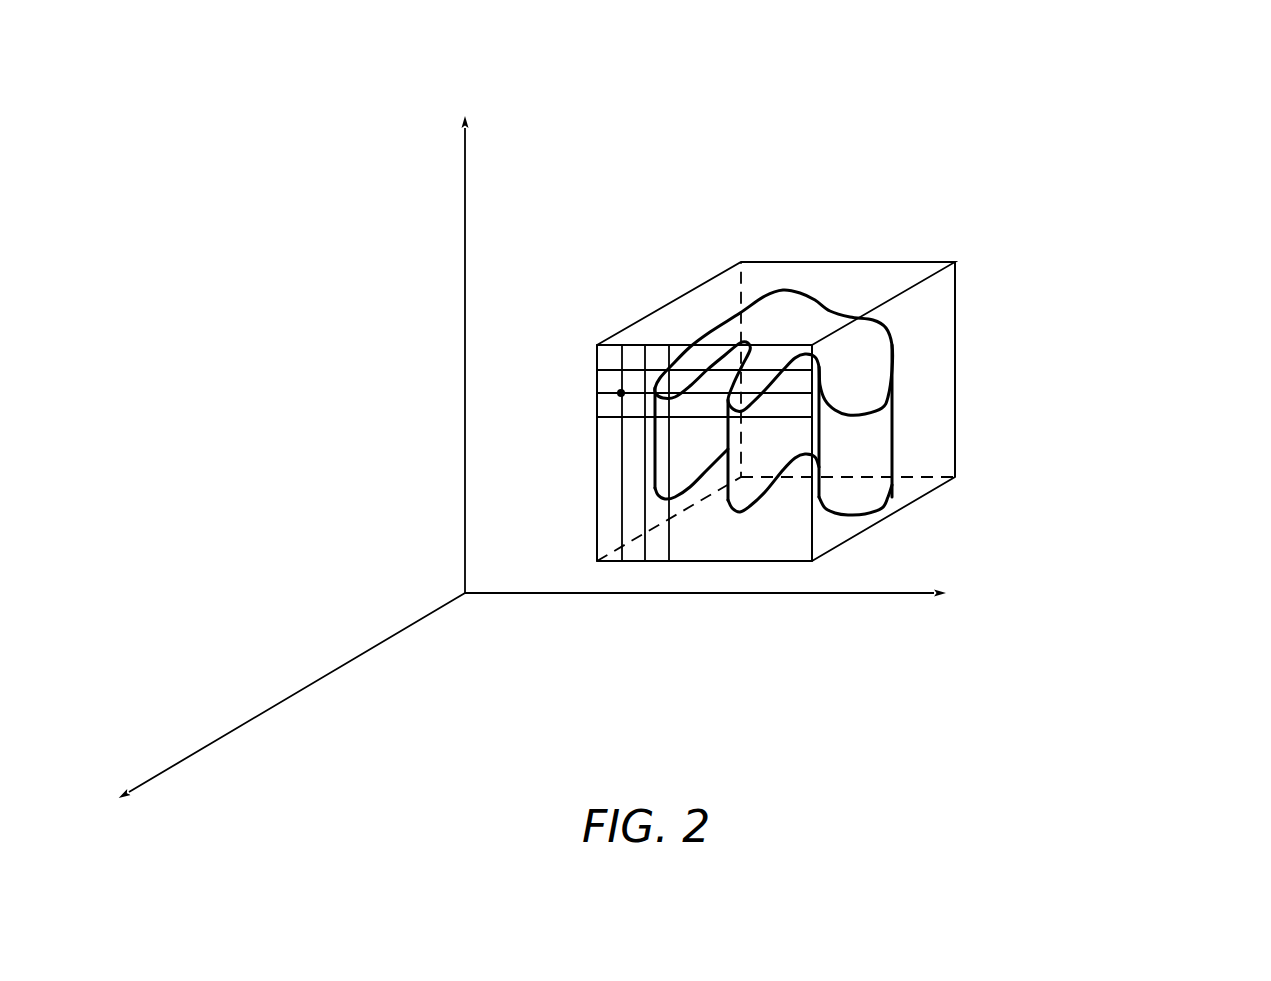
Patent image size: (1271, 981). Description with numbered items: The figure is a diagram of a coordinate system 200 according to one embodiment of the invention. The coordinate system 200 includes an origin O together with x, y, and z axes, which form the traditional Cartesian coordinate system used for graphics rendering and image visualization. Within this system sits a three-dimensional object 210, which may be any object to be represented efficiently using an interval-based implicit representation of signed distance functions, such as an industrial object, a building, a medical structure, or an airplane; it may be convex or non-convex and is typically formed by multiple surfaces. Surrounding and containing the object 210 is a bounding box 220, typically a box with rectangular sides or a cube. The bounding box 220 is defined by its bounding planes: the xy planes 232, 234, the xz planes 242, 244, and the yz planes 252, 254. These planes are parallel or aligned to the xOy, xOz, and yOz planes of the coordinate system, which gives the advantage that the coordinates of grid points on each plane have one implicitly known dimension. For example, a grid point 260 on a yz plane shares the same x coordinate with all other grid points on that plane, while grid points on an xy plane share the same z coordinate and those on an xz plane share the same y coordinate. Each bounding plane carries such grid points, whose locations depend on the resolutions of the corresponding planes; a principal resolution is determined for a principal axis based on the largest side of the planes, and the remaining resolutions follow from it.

The coordinate system 200 is at (1153, 79).
The three-dimensional (3-D) object 210 is at (857, 428).
The bounding box 220 is at (903, 262).
The xy plane 232 is at (924, 267).
The xy plane 234 is at (914, 486).
The xz plane 242 is at (960, 435).
The xz plane 244 is at (794, 548).
The yz plane 252 is at (656, 306).
The yz plane 254 is at (898, 311).
The grid point 260 is at (620, 393).